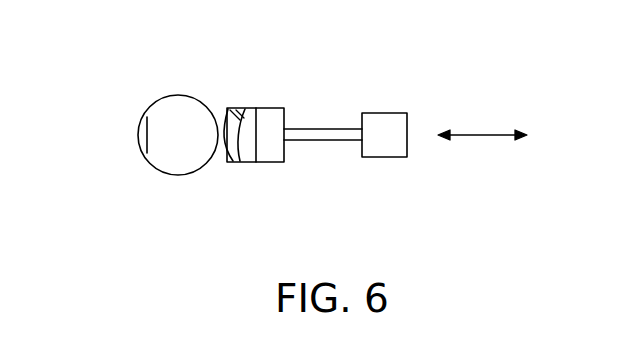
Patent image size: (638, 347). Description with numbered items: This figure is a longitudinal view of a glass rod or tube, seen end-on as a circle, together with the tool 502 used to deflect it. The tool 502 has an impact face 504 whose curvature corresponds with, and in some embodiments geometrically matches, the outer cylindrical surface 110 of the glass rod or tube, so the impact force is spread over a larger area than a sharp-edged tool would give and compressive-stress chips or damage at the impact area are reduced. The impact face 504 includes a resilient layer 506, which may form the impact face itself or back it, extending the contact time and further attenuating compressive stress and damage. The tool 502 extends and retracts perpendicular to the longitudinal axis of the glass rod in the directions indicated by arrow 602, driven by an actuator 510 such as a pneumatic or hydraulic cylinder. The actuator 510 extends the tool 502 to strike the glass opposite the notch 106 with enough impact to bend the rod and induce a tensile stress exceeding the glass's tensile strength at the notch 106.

The notch 106 is at (138, 135).
The outer cylindrical surface 110 is at (177, 95).
The tool 502 is at (275, 108).
The impact face 504 is at (226, 160).
The resilient layer 506 is at (242, 108).
The actuator 510 is at (382, 157).
The arrow 602 is at (482, 134).